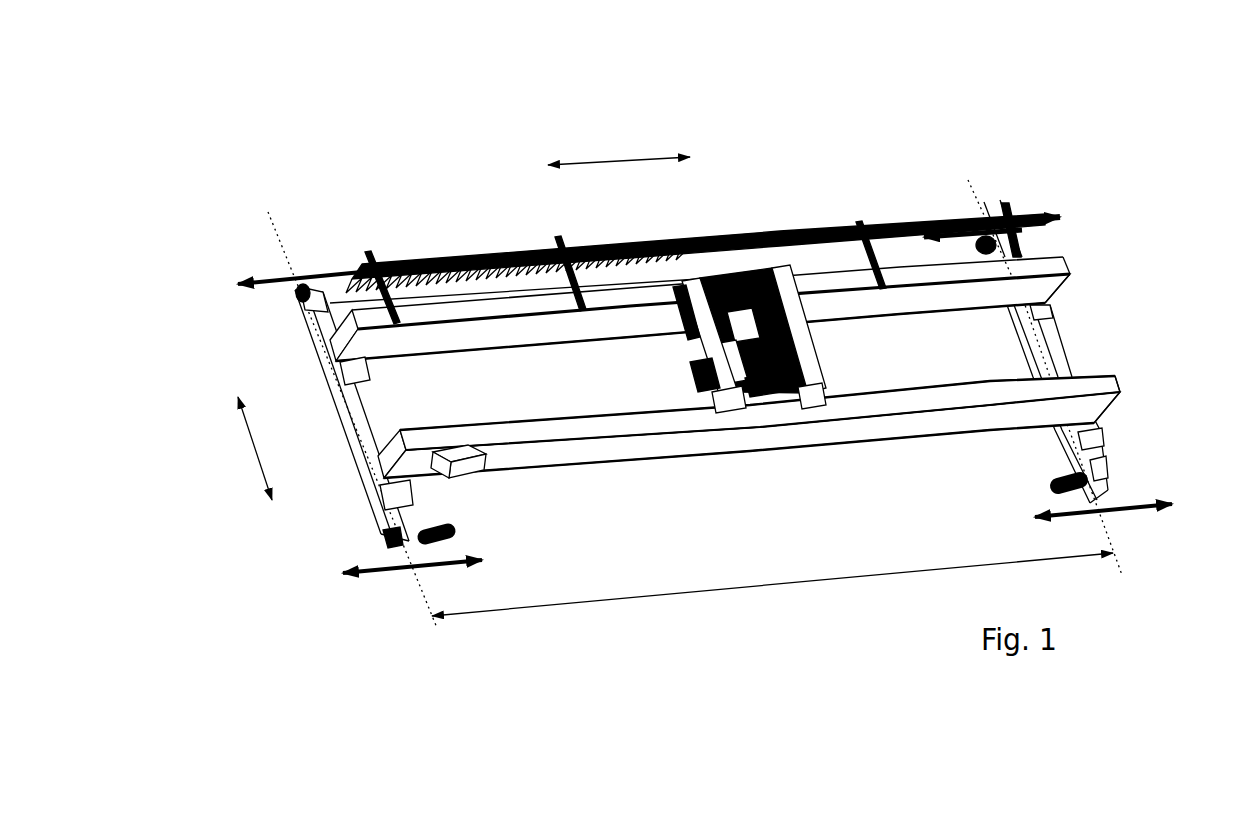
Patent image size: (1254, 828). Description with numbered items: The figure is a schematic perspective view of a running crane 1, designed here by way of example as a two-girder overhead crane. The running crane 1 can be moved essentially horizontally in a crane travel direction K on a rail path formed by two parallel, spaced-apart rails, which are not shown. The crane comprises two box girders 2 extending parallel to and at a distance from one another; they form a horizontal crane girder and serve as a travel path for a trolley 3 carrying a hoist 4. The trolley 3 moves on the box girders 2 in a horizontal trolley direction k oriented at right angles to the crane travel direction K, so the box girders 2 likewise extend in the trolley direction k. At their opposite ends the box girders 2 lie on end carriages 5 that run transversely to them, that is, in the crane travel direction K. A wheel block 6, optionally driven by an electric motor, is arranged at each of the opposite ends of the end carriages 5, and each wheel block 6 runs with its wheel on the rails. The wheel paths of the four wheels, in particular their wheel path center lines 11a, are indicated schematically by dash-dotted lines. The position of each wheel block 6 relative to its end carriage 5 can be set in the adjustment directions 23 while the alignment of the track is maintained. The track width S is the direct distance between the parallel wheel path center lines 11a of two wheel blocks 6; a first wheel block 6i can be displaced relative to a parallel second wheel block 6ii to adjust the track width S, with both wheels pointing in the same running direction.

The running crane 1 is at (362, 160).
The box girders 2 is at (1055, 258).
The trolley 3 is at (802, 311).
The hoist 4 is at (771, 392).
The end carriages 5 is at (358, 395).
The wheel block 6 is at (683, 349).
The first wheel block 6i is at (283, 310).
The second wheel block 6ii is at (960, 218).
The wheel path center lines 11a is at (278, 238).
The adjustment directions 23 is at (302, 278).
The trolley direction k is at (619, 142).
The crane travel direction K is at (248, 448).
The track width S is at (772, 584).